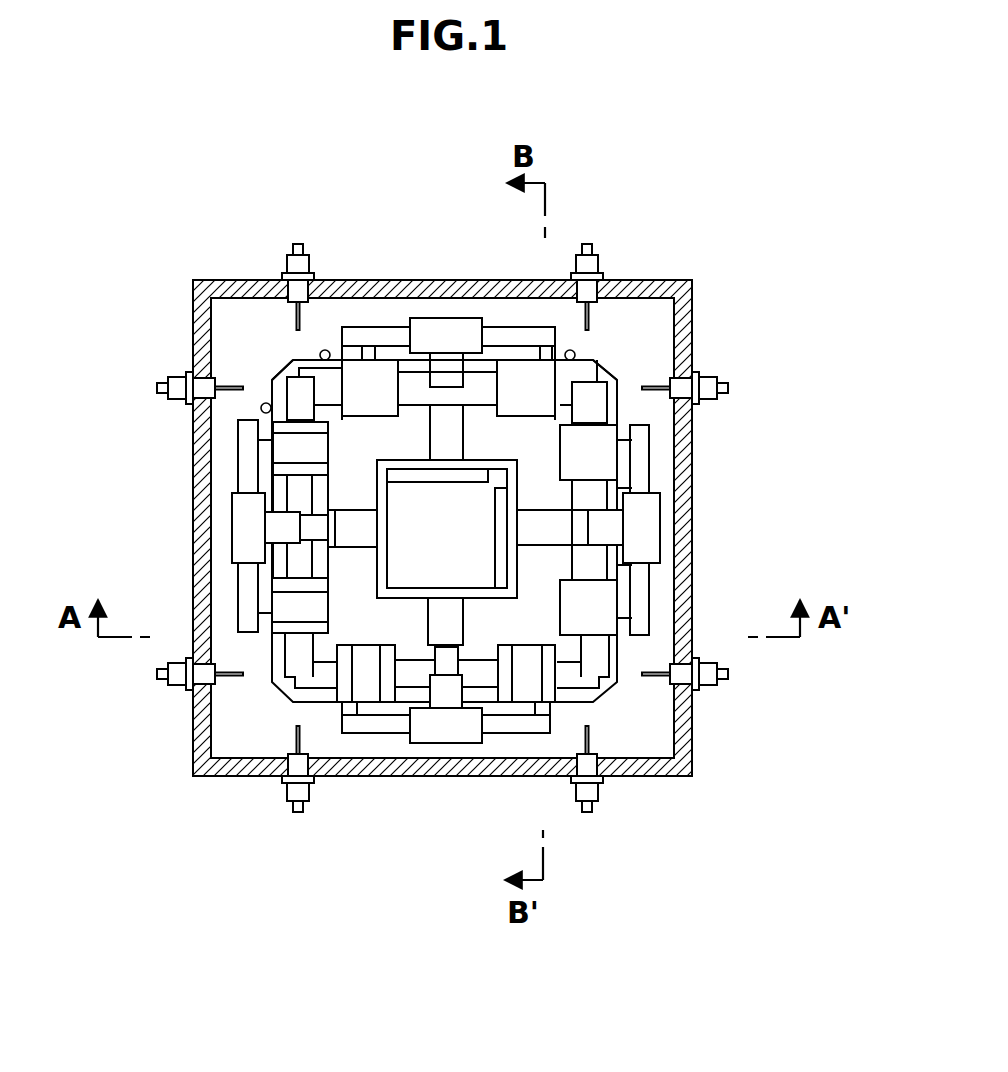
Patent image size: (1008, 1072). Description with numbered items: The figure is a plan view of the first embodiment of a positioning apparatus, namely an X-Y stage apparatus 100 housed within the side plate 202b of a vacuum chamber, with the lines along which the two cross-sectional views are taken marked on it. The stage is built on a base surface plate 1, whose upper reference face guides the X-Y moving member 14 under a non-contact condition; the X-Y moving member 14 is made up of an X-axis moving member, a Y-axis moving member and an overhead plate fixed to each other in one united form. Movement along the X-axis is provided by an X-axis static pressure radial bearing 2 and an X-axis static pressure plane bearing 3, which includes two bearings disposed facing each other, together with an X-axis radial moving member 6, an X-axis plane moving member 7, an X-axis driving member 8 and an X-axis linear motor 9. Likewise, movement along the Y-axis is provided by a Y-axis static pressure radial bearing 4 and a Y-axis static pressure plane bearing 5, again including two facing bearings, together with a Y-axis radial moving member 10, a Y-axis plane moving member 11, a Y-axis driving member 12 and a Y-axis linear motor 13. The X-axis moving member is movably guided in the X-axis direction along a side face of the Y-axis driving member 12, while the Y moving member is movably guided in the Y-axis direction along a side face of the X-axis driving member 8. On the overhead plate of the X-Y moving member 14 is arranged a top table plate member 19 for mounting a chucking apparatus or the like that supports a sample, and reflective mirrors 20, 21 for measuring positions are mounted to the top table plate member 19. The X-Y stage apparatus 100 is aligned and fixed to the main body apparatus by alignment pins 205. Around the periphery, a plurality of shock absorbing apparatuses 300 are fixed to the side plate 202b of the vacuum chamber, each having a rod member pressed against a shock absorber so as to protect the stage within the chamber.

The base surface plate 1 is at (617, 375).
The X-axis static pressure radial bearing 2 is at (370, 690).
The X-axis static pressure plane bearing 3 is at (528, 375).
The Y-axis static pressure radial bearing 4 is at (290, 450).
The Y-axis static pressure plane bearing 5 is at (593, 458).
The X-axis radial moving member 6 is at (484, 678).
The X-axis plane moving member 7 is at (458, 380).
The X-axis driving member 8 is at (450, 442).
The X-axis linear motor 9 is at (420, 316).
The Y-axis radial moving member 10 is at (295, 488).
The Y-axis plane moving member 11 is at (593, 490).
The Y-axis driving member 12 is at (360, 532).
The Y-axis linear motor 13 is at (230, 527).
The X-Y moving member 14 is at (518, 606).
The top table plate member 19 is at (418, 578).
The reflective mirror 20 is at (500, 570).
The reflective mirror 21 is at (398, 470).
The X-Y stage apparatus 100 is at (268, 361).
The side plate 202b is at (200, 570).
The alignment pins 205 is at (262, 404).
The shock absorbing apparatus 300 is at (285, 255).